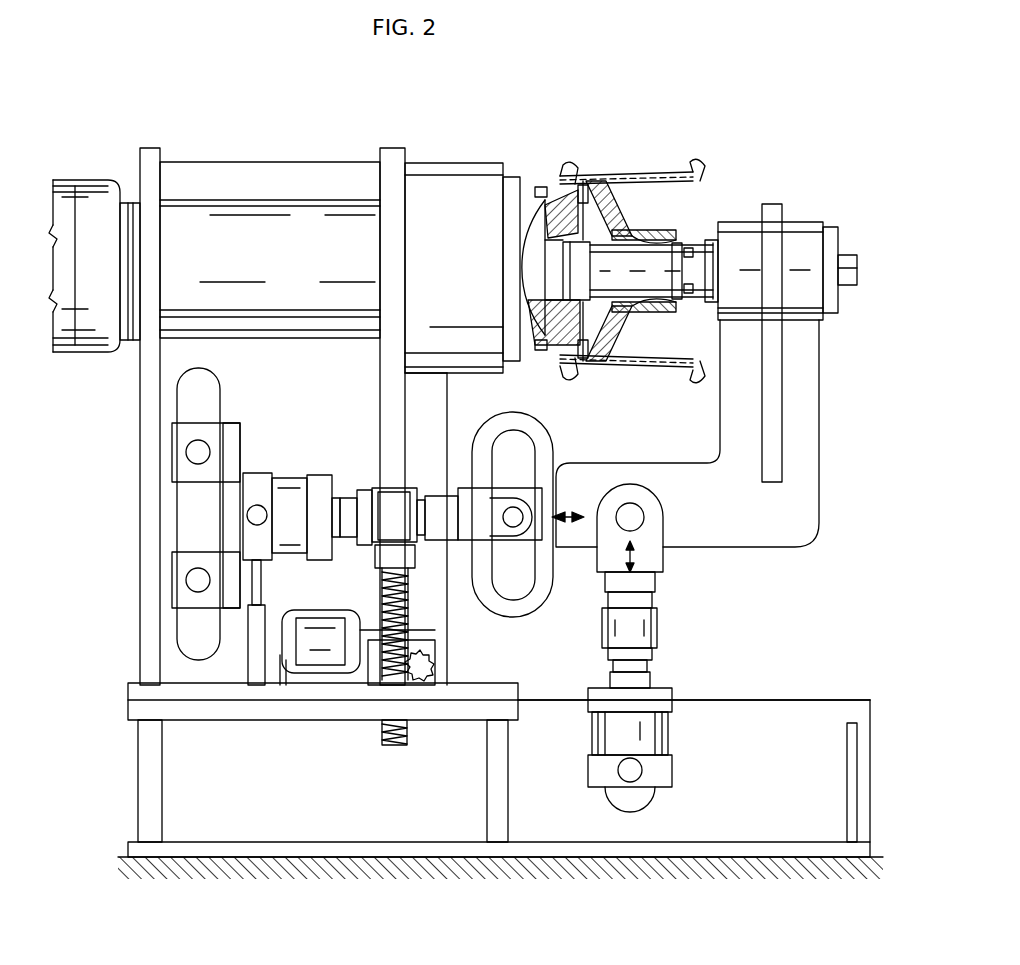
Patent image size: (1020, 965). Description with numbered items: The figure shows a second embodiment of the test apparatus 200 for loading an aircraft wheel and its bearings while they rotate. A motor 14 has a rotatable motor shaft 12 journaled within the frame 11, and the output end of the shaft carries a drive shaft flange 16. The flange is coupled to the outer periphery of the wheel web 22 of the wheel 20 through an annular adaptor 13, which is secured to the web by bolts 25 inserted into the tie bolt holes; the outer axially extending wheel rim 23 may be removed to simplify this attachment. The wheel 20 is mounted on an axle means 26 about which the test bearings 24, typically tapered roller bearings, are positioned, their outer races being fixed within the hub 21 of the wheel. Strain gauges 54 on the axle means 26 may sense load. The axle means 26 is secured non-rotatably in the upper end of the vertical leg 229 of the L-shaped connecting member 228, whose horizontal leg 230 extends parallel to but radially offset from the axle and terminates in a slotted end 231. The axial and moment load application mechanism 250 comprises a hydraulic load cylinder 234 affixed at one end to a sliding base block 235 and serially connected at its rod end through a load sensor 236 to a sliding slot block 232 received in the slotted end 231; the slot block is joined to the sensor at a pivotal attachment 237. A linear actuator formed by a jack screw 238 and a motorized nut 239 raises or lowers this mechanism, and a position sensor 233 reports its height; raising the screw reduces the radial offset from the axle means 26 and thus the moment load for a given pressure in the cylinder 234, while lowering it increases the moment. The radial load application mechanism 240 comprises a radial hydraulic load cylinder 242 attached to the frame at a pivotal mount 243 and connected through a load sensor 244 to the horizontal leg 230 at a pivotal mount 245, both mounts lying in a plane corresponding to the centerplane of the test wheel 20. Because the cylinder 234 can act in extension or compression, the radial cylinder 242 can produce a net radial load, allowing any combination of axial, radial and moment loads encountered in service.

The frame 11 is at (438, 158).
The motor shaft 12 is at (545, 270).
The annular adaptor 13 is at (614, 240).
The motor 14 is at (83, 196).
The drive shaft flange 16 is at (545, 207).
The wheel 20 is at (692, 192).
The hub 21 is at (650, 243).
The wheel web 22 is at (592, 185).
The wheel rim 23 is at (672, 170).
The test bearings 24 is at (660, 300).
The bolts 25 is at (551, 186).
The axle means 26 is at (703, 242).
The strain gauges 54 is at (695, 253).
The test apparatus 200 is at (775, 124).
The L-shaped connecting member 228 is at (812, 450).
The vertical leg 229 is at (822, 355).
The horizontal leg 230 is at (680, 472).
The slotted end 231 is at (508, 445).
The sliding slot block 232 is at (553, 548).
The position sensor 233 is at (255, 668).
The hydraulic load cylinder 234 is at (286, 490).
The sliding base block 235 is at (232, 520).
The load sensor 236 is at (388, 495).
The pivotal attachment 237 is at (513, 525).
The jack screw 238 is at (378, 594).
The motorized nut 239 is at (420, 682).
The radial load application mechanism 240 is at (687, 728).
The radial hydraulic load cylinder 242 is at (658, 740).
The pivotal mount 243 is at (632, 775).
The load sensor 244 is at (648, 630).
The pivotal mount 245 is at (640, 520).
The axial and moment load application mechanism 250 is at (302, 455).